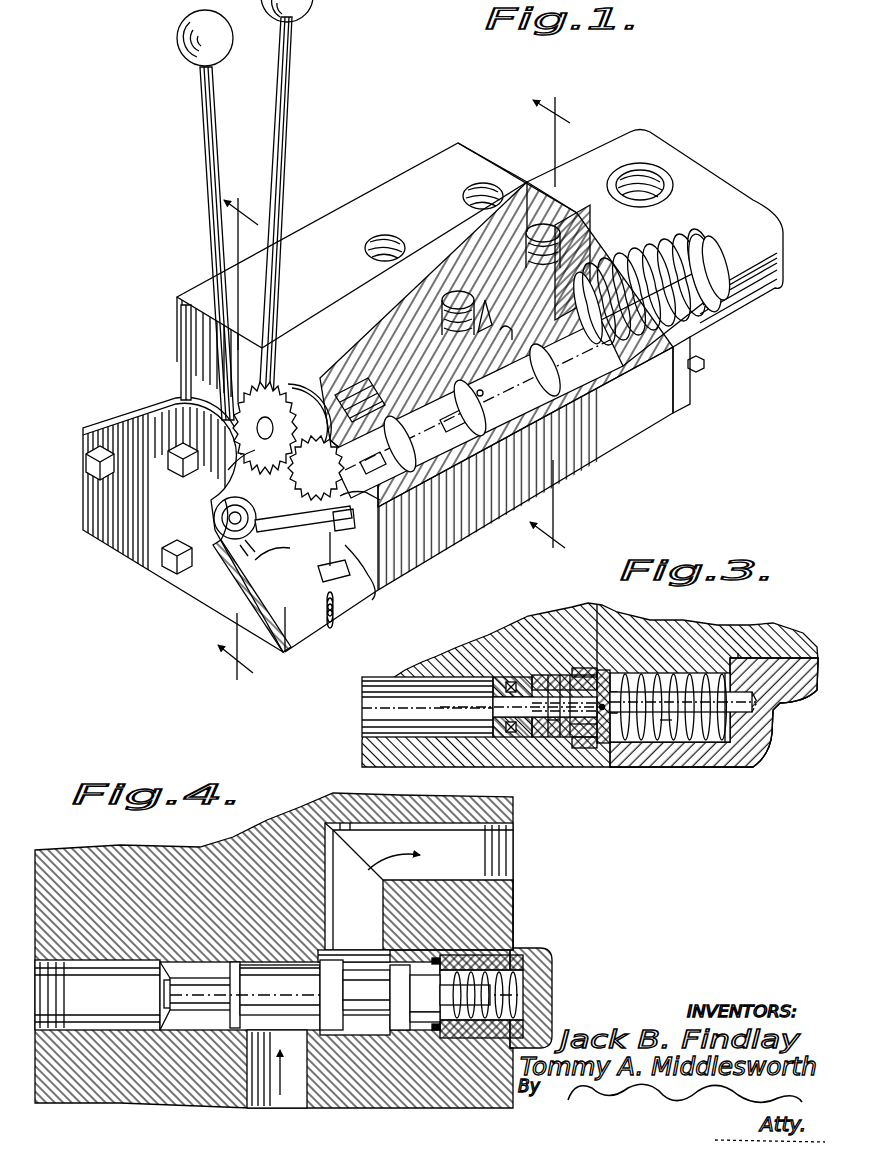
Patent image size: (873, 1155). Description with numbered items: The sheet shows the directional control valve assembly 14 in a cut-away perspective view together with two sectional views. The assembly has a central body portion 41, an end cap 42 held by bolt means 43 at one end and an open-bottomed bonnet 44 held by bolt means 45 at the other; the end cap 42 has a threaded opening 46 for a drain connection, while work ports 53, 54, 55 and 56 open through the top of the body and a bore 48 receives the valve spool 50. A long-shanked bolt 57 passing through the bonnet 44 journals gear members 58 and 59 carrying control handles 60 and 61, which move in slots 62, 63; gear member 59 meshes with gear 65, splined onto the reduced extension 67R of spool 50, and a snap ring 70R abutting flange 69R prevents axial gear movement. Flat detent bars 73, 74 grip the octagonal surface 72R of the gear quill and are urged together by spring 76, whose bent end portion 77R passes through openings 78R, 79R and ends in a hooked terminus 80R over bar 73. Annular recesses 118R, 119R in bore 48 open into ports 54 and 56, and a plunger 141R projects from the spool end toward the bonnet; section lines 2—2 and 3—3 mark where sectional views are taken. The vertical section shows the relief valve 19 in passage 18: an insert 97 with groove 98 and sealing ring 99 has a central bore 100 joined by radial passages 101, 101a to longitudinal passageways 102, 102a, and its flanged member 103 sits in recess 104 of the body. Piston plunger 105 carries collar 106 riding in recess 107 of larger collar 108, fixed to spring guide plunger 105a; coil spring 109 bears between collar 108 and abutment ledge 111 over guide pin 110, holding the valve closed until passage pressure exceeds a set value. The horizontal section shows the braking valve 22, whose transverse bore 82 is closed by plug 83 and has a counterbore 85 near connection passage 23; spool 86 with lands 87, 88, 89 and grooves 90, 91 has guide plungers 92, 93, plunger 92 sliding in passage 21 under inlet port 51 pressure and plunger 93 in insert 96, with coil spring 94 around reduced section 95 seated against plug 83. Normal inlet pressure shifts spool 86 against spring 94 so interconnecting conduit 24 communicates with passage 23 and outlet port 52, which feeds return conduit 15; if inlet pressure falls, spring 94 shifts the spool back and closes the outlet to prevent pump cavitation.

In FIG. 1, the directional control valve assembly 14 is at (350, 140).
In FIG. 1, the central body portion 41 is at (407, 173).
In FIG. 1, the end cap 42 is at (617, 137).
In FIG. 3, the end cap 42 is at (795, 738).
In FIG. 1, the bolt means 43 is at (706, 366).
In FIG. 1, the bonnet 44 is at (153, 400).
In FIG. 1, the bolt means 45 is at (92, 462).
In FIG. 1, the threaded opening 46 is at (640, 182).
In FIG. 1, the bore 48 is at (380, 400).
In FIG. 1, the valve spool element 50 is at (438, 388).
In FIG. 1, the work port 53 is at (385, 240).
In FIG. 1, the work port 54 is at (457, 290).
In FIG. 1, the work port 55 is at (480, 188).
In FIG. 1, the work port 56 is at (545, 240).
In FIG. 1, the long-shanked bolt 57 is at (170, 468).
In FIG. 1, the gear member 58 is at (240, 462).
In FIG. 1, the gear member 59 is at (300, 372).
In FIG. 1, the operating control handle 60 is at (205, 108).
In FIG. 1, the operating control handle 61 is at (290, 62).
In FIG. 1, the slot 62 is at (182, 385).
In FIG. 1, the slot 63 is at (268, 335).
In FIG. 1, the gear 65 is at (322, 432).
In FIG. 1, the reduced-diametered end section 67R is at (242, 580).
In FIG. 1, the flange 69R is at (247, 557).
In FIG. 1, the snap ring 70R is at (222, 508).
In FIG. 1, the octagonal surface 72R is at (272, 575).
In FIG. 1, the detent bar 73 is at (348, 518).
In FIG. 1, the detent bar 74 is at (325, 560).
In FIG. 1, the spring 76 is at (338, 606).
In FIG. 1, the bent-over end portion 77R is at (360, 570).
In FIG. 1, the opening 78R is at (312, 468).
In FIG. 1, the opening 79R is at (326, 592).
In FIG. 1, the hooked terminus 80R is at (385, 502).
In FIG. 1, the annular recess 118R is at (500, 308).
In FIG. 1, the annular recess 119R is at (505, 327).
In FIG. 1, the plunger 141R is at (226, 521).
In FIG. 1, the section line 2- 2 is at (238, 446).
In FIG. 1, the section line 3— 3 is at (551, 334).
In FIG. 3, the longitudinal passage 18 is at (430, 737).
In FIG. 3, the relief valve 19 is at (682, 670).
In FIG. 3, the cylinder-like insert 97 is at (540, 690).
In FIG. 3, the annular groove 98 is at (506, 682).
In FIG. 3, the sealing ring 99 is at (512, 680).
In FIG. 3, the central bore 100 is at (490, 714).
In FIG. 3, the radial passage 101 is at (552, 690).
In FIG. 3, the radial passage 101a is at (546, 745).
In FIG. 3, the longitudinal passageway 102 is at (572, 684).
In FIG. 3, the longitudinal passageway 102a is at (575, 742).
In FIG. 3, the flanged member 103 is at (604, 690).
In FIG. 3, the recess 104 is at (607, 752).
In FIG. 3, the piston-like plunger 105 is at (512, 740).
In FIG. 3, the spring guide plunger 105a is at (648, 730).
In FIG. 3, the collar 106 is at (606, 700).
In FIG. 3, the recess 107 is at (622, 704).
In FIG. 3, the larger collar 108 is at (607, 707).
In FIG. 3, the coil spring 109 is at (690, 682).
In FIG. 3, the guide pin 110 is at (670, 738).
In FIG. 3, the abutment ledge 111 is at (738, 660).
In FIG. 4, the return conduit 15 is at (515, 850).
In FIG. 4, the passage 21 is at (170, 980).
In FIG. 4, the braking valve 22 is at (275, 952).
In FIG. 4, the connection passage 23 is at (378, 898).
In FIG. 4, the interconnecting conduit 24 is at (290, 1088).
In FIG. 4, the inlet port opening 51 is at (88, 970).
In FIG. 4, the outlet port 52 is at (513, 838).
In FIG. 4, the transverse bore 82 is at (263, 964).
In FIG. 4, the threaded closure plug 83 is at (553, 976).
In FIG. 4, the counterbore area 85 is at (362, 1030).
In FIG. 4, the spool valve element 86 is at (247, 962).
In FIG. 4, the land 87 is at (232, 970).
In FIG. 4, the land 88 is at (332, 962).
In FIG. 4, the land 89 is at (412, 968).
In FIG. 4, the groove 90 is at (305, 978).
In FIG. 4, the groove 91 is at (366, 972).
In FIG. 4, the guide plunger section 92 is at (200, 998).
In FIG. 4, the guide plunger section 93 is at (426, 1028).
In FIG. 4, the coil spring 94 is at (505, 1000).
In FIG. 4, the reduced-diameter section 95 is at (511, 957).
In FIG. 4, the insert 96 is at (462, 968).